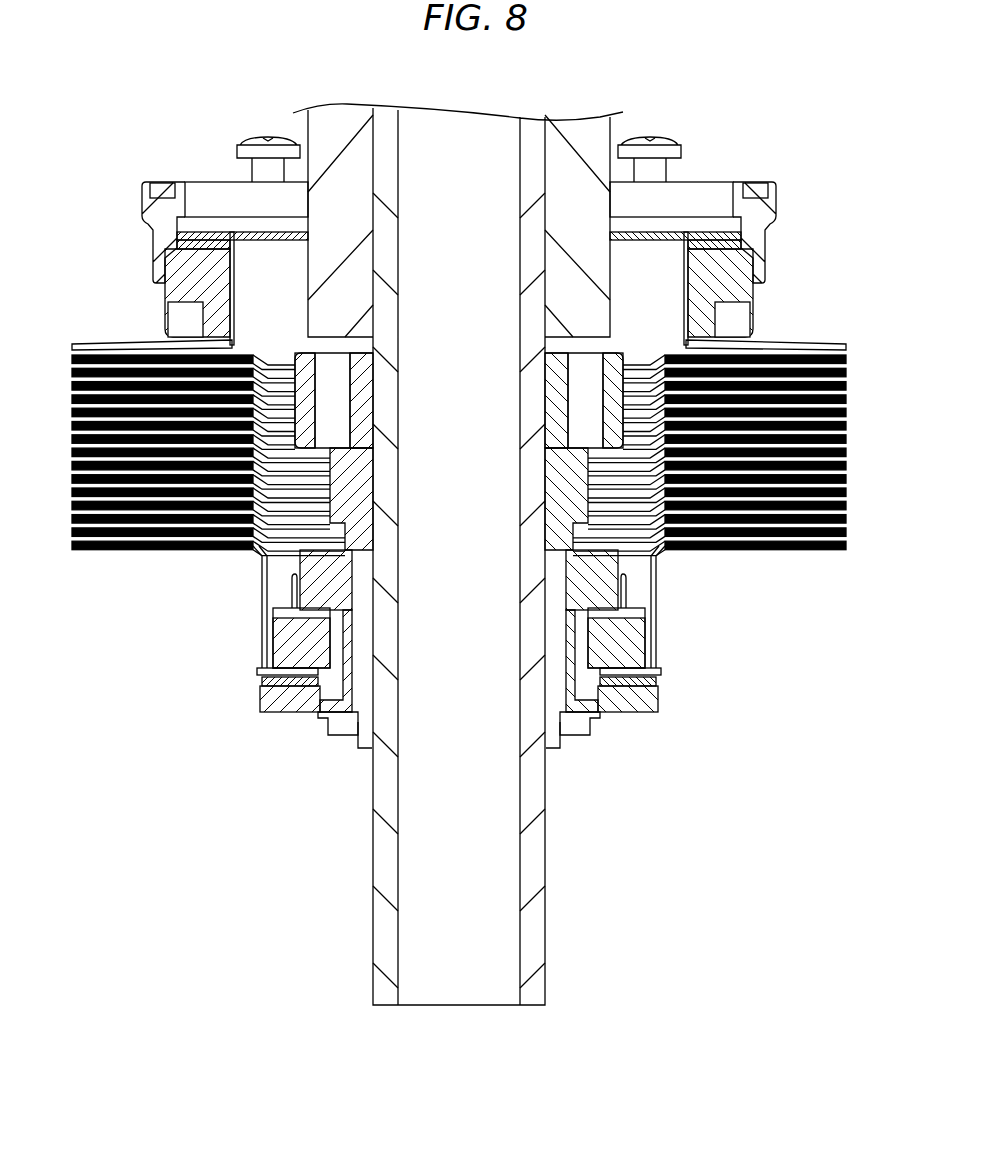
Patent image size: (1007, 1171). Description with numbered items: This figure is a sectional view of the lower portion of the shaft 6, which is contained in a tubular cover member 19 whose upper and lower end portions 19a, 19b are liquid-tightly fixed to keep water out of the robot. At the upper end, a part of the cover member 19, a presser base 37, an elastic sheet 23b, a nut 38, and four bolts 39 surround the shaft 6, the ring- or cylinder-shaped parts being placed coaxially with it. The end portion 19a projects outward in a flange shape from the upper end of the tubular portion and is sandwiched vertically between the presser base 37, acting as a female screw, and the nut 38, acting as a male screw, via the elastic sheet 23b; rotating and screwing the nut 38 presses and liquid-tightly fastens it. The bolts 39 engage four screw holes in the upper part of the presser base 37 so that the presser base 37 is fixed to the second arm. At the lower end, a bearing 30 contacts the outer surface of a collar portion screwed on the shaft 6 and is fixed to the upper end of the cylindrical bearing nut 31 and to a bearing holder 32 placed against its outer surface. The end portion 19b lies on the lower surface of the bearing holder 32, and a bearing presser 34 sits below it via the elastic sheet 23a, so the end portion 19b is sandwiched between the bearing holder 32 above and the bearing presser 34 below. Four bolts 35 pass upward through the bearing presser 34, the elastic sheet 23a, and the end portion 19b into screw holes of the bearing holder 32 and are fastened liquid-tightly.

The shaft 6 is at (540, 858).
The cover member 19 is at (858, 384).
The end portion 19a is at (720, 230).
The end portion 19b is at (652, 673).
The elastic sheet 23a is at (637, 681).
The elastic sheet 23b is at (747, 243).
The bearing 30 is at (607, 567).
The bearing nut 31 is at (578, 697).
The bearing holder 32 is at (620, 625).
The bearing presser 34 is at (648, 700).
The bolts 35 is at (342, 732).
The presser base 37 is at (778, 207).
The nut 38 is at (737, 275).
The bolts 39 is at (247, 138).